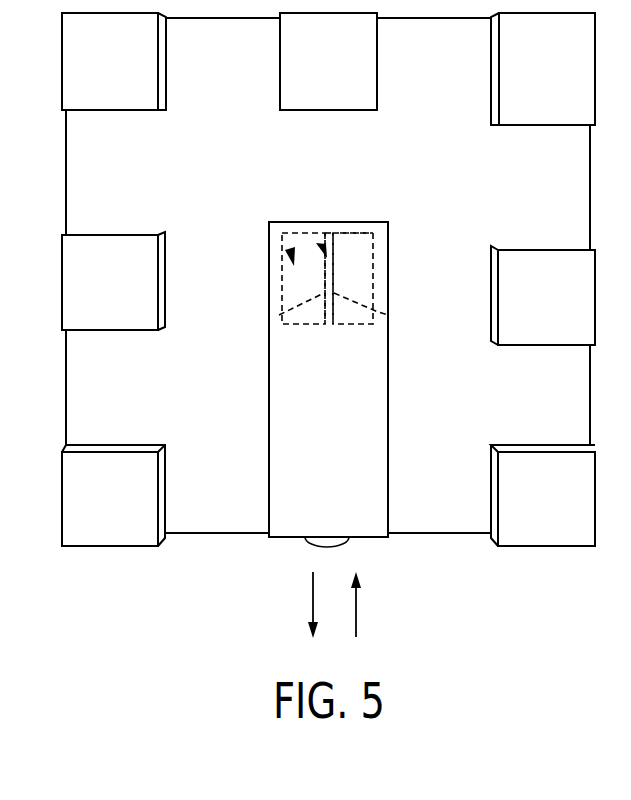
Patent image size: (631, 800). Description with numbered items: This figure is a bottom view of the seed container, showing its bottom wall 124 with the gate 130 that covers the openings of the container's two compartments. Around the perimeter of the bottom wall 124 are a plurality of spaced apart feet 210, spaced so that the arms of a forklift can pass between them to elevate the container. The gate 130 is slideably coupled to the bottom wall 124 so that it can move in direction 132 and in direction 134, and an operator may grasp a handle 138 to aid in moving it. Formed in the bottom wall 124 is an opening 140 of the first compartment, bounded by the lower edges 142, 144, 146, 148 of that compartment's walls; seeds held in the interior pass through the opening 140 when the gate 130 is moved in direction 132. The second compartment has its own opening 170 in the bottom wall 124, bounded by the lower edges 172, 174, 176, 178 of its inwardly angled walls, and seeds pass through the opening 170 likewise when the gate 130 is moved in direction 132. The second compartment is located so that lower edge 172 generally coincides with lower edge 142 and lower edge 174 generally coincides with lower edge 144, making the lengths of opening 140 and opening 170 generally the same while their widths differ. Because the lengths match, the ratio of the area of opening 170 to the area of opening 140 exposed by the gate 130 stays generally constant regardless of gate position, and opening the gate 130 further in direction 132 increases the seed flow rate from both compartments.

The bottom wall 124 is at (90, 401).
The feet 210 is at (328, 279).
The gate 130 is at (372, 505).
The handle 138 is at (353, 550).
The direction 132 is at (312, 601).
The direction 134 is at (358, 620).
The opening 140 is at (286, 250).
The opening 170 is at (317, 243).
The lower edge 174 is at (326, 234).
The lower edge 144 is at (360, 233).
The lower edge 146 is at (282, 265).
The lower edge 148 is at (373, 263).
The lower edge 176 is at (279, 315).
The lower edge 178 is at (388, 315).
The lower edge 172 is at (332, 327).
The lower edge 142 is at (343, 327).